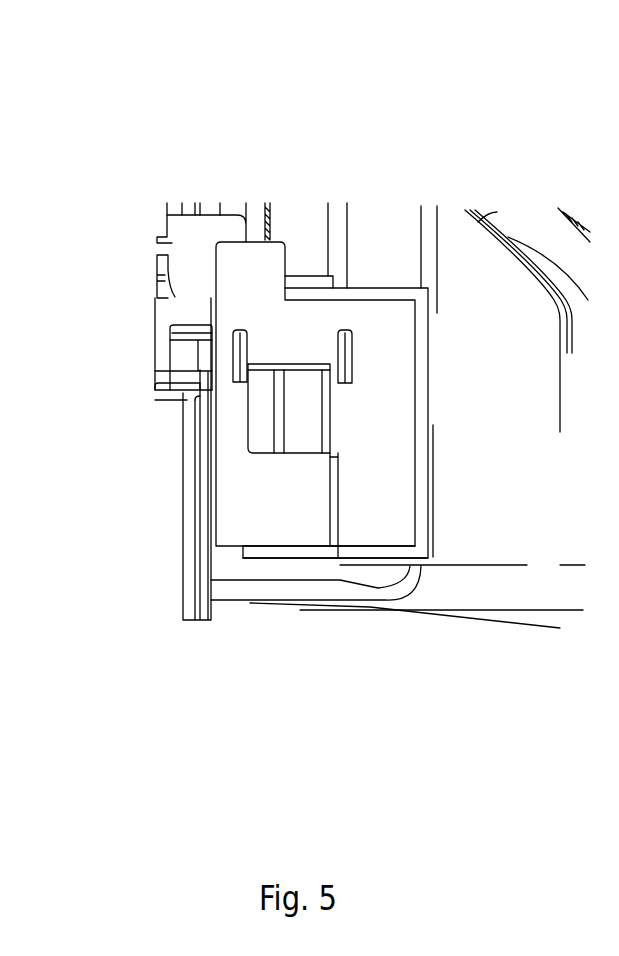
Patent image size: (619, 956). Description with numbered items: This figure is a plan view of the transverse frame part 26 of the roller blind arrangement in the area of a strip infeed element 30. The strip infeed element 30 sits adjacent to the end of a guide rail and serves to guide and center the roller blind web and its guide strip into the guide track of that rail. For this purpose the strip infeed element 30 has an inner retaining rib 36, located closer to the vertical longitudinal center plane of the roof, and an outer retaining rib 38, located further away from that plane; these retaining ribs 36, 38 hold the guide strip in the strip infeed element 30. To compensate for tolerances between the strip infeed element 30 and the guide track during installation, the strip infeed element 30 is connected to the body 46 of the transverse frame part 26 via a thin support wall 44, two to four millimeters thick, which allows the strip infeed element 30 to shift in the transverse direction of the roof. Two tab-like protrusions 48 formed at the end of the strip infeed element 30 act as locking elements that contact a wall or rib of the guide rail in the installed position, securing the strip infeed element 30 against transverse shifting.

The transverse frame part 26 is at (490, 623).
The strip infeed element 30 is at (302, 378).
The inner retaining rib 36 is at (322, 430).
The outer retaining rib 38 is at (272, 420).
The support wall 44 is at (332, 528).
The body 46 is at (332, 553).
The tab-like protrusion 48 is at (235, 345).